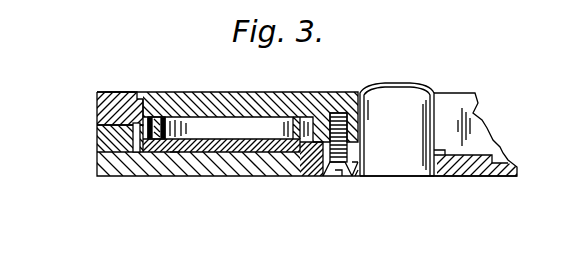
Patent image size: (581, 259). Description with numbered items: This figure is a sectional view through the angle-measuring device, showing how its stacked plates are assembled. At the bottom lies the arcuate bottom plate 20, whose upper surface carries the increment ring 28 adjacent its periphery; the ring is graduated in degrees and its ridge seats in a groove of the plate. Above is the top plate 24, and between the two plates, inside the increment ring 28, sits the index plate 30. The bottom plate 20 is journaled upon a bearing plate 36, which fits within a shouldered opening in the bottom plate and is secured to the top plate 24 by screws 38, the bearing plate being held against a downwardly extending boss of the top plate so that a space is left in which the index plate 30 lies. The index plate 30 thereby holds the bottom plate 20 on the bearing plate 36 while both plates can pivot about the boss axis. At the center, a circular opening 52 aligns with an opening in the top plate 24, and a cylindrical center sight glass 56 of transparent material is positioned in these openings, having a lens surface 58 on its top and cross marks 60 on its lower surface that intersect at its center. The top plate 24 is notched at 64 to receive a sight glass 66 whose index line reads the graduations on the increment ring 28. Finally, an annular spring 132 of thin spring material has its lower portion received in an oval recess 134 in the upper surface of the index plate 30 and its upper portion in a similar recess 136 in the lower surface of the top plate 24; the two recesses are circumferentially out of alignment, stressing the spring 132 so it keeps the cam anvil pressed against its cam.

The bottom plate 20 is at (265, 177).
The top plate 24 is at (231, 97).
The increment ring 28 is at (97, 137).
The index plate 30 is at (242, 152).
The bearing plate 36 is at (289, 176).
The screws 38 is at (344, 176).
The central circular opening 52 is at (427, 176).
The center sight glass 56 is at (424, 168).
The lens surface 58 is at (410, 86).
The cross marks 60 is at (394, 176).
The notch 64 is at (117, 92).
The sight glass 66 is at (100, 92).
The spring 132 is at (175, 170).
The recess 134 is at (145, 176).
The recess 136 is at (145, 176).